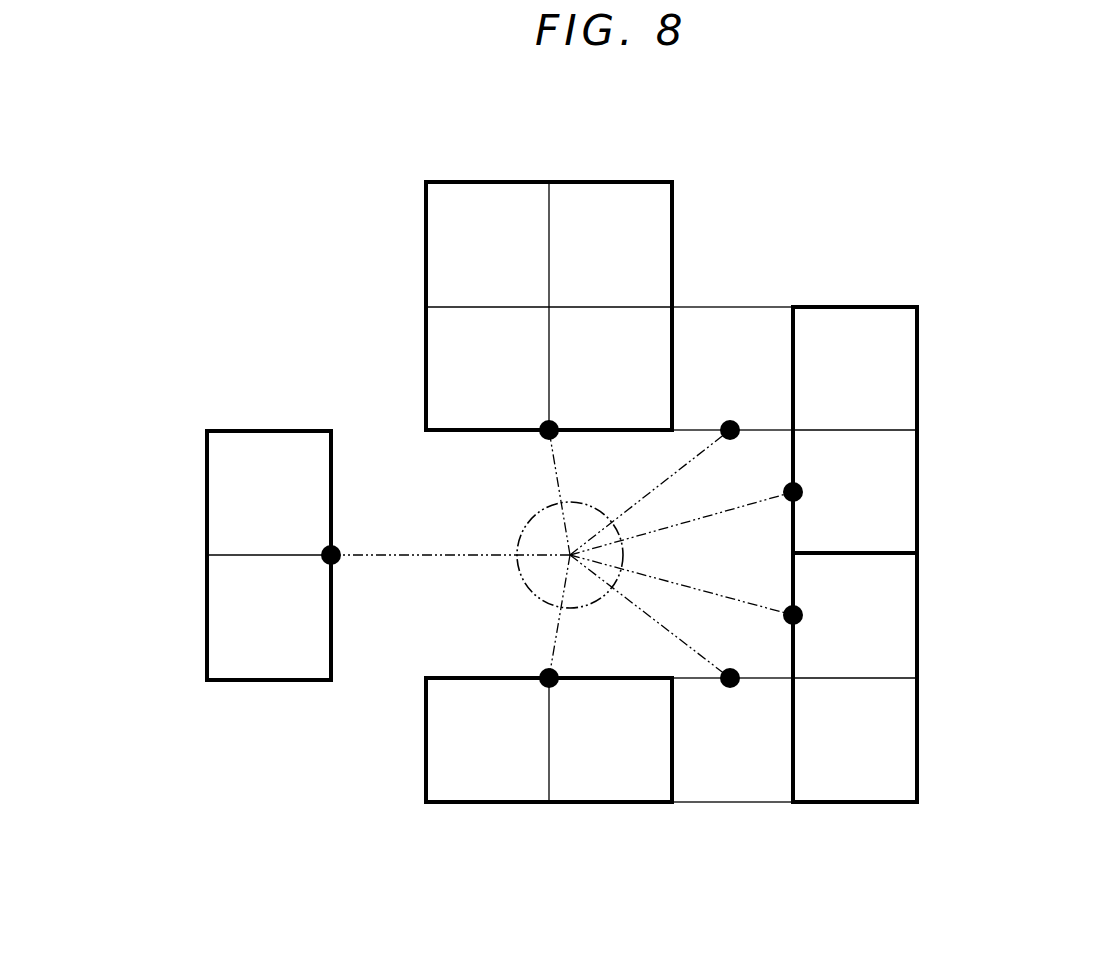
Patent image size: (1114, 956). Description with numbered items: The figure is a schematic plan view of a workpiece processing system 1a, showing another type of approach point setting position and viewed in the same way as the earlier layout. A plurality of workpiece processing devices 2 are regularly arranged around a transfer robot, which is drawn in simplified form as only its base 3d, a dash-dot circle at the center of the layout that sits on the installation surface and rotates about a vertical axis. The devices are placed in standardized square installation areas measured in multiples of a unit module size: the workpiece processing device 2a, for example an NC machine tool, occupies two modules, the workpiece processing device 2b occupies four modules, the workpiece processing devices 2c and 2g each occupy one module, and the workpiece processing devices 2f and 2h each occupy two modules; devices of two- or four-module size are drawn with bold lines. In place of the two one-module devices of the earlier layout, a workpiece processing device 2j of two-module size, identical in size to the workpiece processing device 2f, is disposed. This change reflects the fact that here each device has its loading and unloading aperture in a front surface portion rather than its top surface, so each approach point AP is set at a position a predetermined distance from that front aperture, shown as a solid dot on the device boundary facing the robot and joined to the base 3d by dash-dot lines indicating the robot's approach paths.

The workpiece processing system 1a is at (831, 139).
The workpiece processing devices 2 is at (1036, 427).
The workpiece processing device 2a is at (207, 555).
The workpiece processing device 2b is at (549, 182).
The workpiece processing device 2c is at (730, 307).
The workpiece processing device 2f is at (917, 678).
The workpiece processing device 2g is at (730, 802).
The workpiece processing device 2h is at (549, 802).
The workpiece processing device 2j is at (917, 430).
The base 3d is at (588, 503).
The approach point AP is at (340, 560).